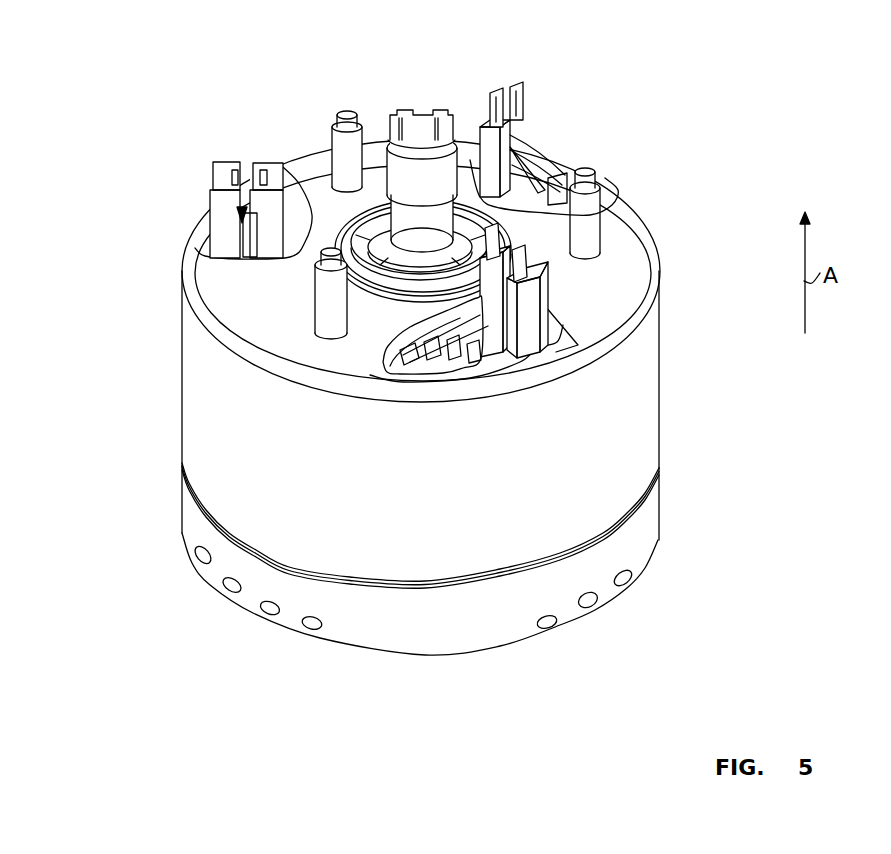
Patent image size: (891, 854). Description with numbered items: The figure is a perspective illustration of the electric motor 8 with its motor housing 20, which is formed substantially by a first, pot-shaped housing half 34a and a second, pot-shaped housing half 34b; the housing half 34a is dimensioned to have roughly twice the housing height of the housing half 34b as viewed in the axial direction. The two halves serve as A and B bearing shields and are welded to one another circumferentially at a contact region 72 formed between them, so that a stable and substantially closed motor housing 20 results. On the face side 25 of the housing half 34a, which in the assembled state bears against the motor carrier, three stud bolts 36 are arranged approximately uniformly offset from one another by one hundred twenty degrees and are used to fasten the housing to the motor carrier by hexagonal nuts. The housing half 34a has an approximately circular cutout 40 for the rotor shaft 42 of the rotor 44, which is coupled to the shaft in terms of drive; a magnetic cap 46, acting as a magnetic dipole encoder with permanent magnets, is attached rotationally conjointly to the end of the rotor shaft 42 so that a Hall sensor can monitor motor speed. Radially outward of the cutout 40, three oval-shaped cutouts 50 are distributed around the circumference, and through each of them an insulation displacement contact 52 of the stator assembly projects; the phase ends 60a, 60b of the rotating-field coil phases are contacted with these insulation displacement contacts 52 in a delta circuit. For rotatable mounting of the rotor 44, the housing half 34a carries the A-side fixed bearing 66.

The electric motor 8 is at (714, 165).
The motor housing 20 is at (480, 468).
The face side 25 is at (626, 248).
The first housing half 34a is at (643, 367).
The second housing half 34b is at (450, 555).
The stud bolts 36 is at (357, 160).
The circular cutout 40 is at (385, 293).
The rotor shaft 42 is at (305, 146).
The rotor 44 is at (400, 220).
The magnetic cap 46 is at (430, 105).
The oval-shaped cutouts 50 is at (620, 193).
The insulation displacement contact 52 is at (530, 112).
The phase end 60a is at (577, 173).
The phase end 60b is at (548, 183).
The A-side fixed bearing 66 is at (387, 287).
The contact region 72 is at (233, 533).